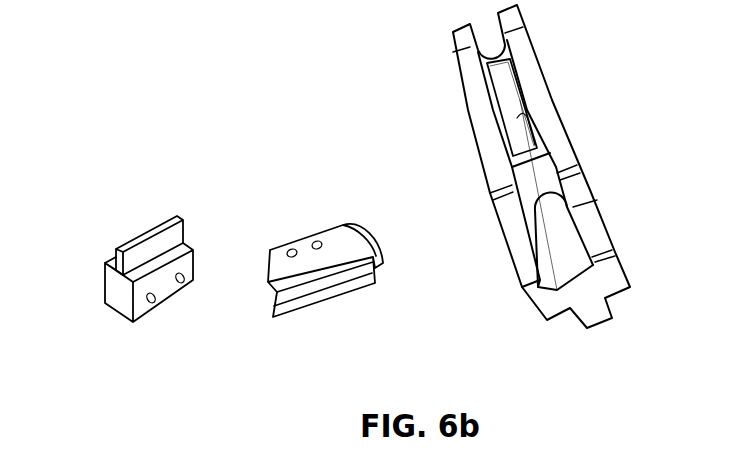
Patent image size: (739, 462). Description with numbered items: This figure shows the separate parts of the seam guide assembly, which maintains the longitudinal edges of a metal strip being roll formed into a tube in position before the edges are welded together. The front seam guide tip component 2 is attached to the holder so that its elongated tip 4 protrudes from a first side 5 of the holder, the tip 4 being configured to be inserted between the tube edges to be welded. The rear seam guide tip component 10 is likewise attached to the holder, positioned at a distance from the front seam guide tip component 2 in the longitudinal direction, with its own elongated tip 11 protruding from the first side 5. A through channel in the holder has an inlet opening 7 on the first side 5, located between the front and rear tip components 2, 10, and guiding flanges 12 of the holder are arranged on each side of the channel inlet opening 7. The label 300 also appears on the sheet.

The front seam guide tip component 2 is at (269, 270).
The elongated tip 4 is at (332, 282).
The first side 5 is at (467, 85).
The inlet opening 7 is at (494, 97).
The rear seam guide tip component 10 is at (108, 296).
The elongated tip 11 is at (158, 240).
The guiding flanges 12 is at (483, 160).
The assembly 300 is at (203, 447).